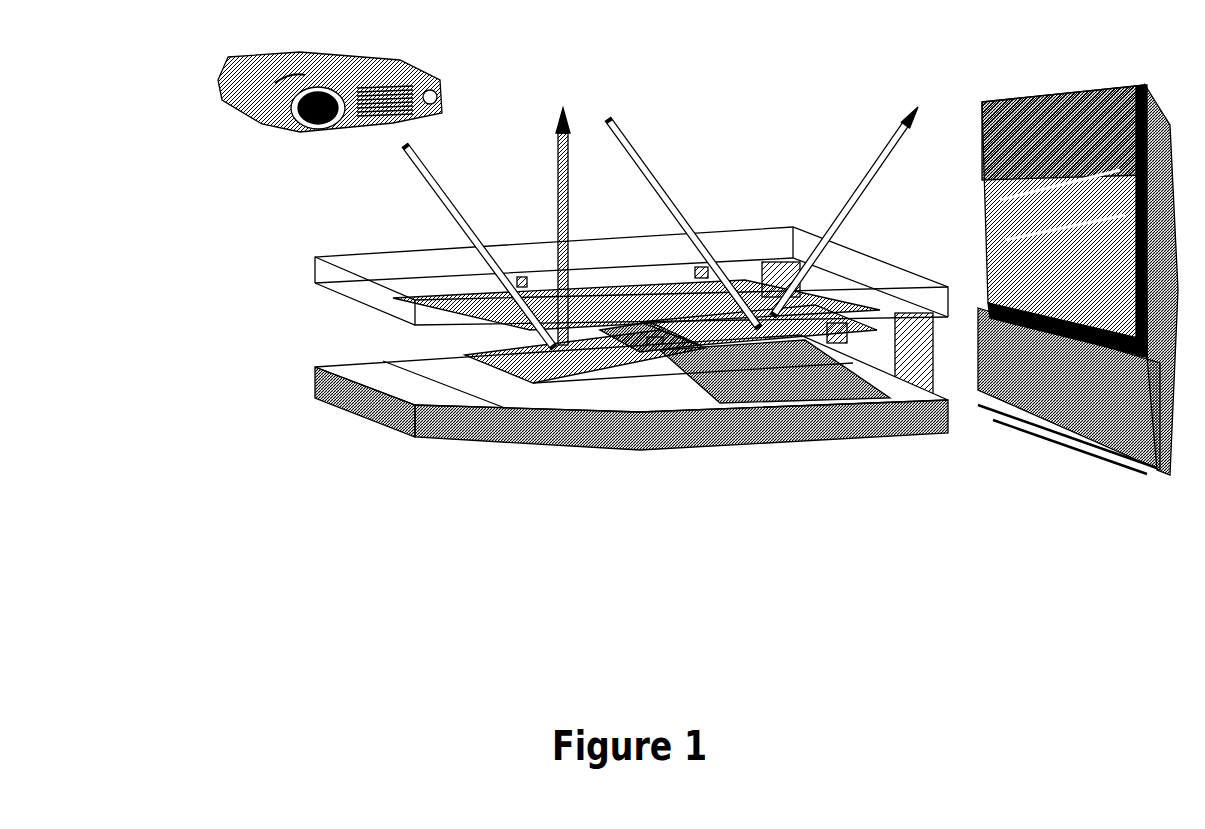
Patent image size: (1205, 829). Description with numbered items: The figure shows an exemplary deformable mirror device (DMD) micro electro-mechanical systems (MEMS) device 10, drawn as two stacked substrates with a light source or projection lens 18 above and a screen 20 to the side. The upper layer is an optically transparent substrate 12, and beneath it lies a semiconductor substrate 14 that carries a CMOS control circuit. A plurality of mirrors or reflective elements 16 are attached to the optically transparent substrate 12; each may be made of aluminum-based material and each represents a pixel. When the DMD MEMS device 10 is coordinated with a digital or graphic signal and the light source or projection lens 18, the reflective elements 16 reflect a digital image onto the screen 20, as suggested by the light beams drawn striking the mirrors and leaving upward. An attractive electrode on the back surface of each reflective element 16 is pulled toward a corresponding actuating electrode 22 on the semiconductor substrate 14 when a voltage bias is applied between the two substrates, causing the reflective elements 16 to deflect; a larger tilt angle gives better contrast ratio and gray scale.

The deformable mirror device MEMS device 10 is at (636, 462).
The optically transparent substrate 12 is at (313, 267).
The semiconductor substrate 14 is at (313, 395).
The mirrors or reflective elements 16 is at (622, 350).
The light source or projection lens 18 is at (350, 51).
The screen 20 is at (1083, 400).
The actuating electrode 22 is at (542, 395).